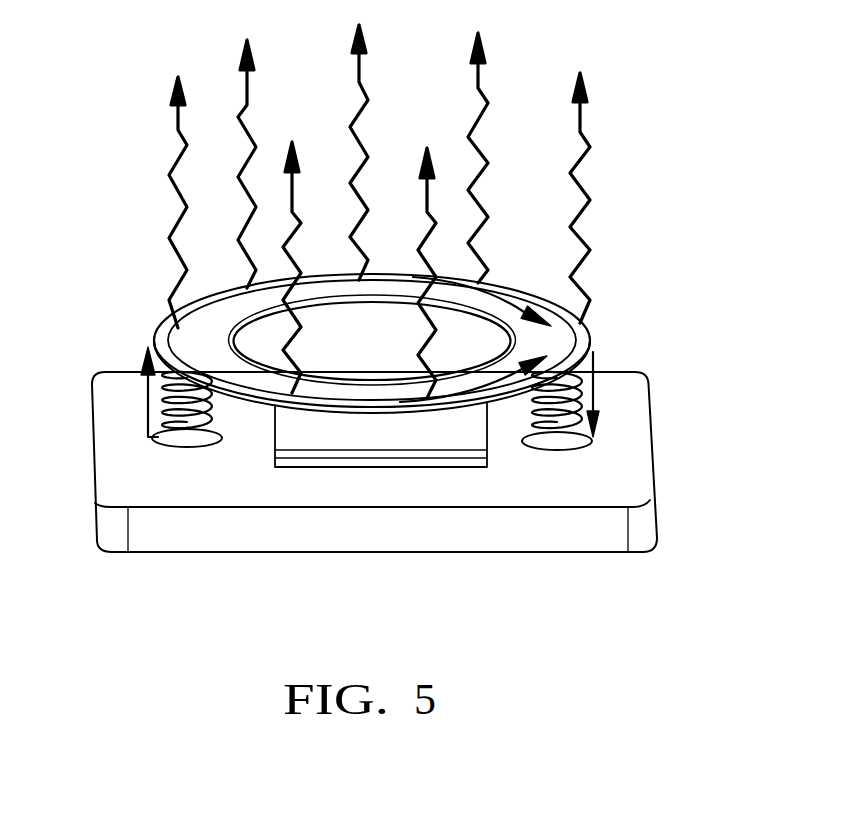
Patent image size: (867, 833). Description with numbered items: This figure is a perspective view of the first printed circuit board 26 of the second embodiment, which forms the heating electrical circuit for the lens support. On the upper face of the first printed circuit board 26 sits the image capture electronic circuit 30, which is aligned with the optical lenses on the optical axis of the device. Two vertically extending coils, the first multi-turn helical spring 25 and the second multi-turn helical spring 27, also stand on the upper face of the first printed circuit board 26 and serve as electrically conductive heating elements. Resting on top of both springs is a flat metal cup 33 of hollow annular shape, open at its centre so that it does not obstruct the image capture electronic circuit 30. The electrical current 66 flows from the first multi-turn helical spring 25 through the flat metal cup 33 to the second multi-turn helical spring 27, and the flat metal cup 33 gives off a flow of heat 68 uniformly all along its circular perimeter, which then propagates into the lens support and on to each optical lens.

The first multi-turn helical spring 25 is at (162, 435).
The first printed circuit board 26 is at (668, 493).
The second multi-turn helical spring 27 is at (590, 347).
The image capture electronic circuit 30 is at (338, 434).
The flat metal cup 33 is at (443, 343).
The electrical current 66 is at (505, 298).
The flow of heat 68 is at (172, 180).